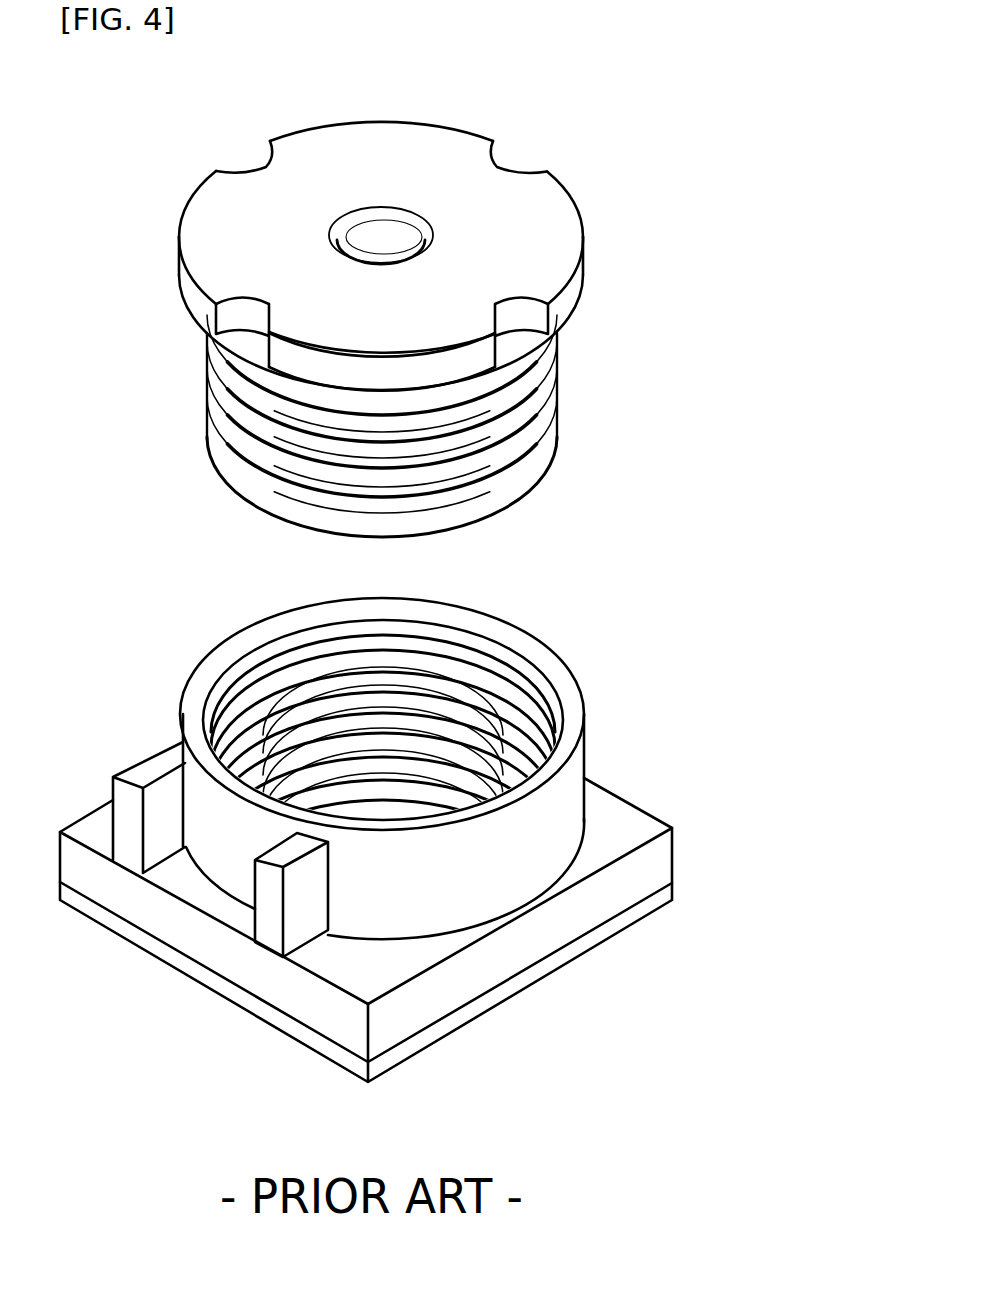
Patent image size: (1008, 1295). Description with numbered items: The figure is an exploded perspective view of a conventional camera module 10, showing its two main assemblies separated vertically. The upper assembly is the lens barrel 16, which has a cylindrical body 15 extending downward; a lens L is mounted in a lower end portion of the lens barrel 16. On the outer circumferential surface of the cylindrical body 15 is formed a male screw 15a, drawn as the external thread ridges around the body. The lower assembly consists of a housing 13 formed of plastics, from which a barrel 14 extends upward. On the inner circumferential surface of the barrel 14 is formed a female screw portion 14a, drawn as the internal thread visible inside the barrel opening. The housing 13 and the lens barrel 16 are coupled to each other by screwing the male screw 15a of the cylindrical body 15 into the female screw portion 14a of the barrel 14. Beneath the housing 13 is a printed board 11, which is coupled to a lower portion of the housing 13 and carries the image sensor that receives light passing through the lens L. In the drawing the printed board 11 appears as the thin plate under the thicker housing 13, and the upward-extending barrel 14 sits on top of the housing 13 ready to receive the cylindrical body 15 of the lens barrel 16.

The camera module 10 is at (712, 315).
The lens barrel 16 is at (557, 238).
The lens L is at (385, 235).
The cylindrical body 15 is at (426, 430).
The male screw 15a is at (457, 447).
The barrel 14 is at (437, 766).
The female screw portion 14a is at (480, 673).
The housing 13 is at (538, 942).
The printed board 11 is at (467, 1015).